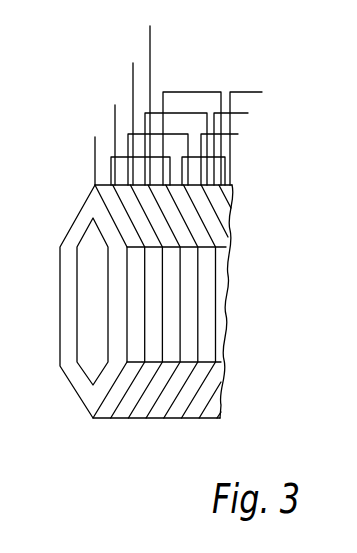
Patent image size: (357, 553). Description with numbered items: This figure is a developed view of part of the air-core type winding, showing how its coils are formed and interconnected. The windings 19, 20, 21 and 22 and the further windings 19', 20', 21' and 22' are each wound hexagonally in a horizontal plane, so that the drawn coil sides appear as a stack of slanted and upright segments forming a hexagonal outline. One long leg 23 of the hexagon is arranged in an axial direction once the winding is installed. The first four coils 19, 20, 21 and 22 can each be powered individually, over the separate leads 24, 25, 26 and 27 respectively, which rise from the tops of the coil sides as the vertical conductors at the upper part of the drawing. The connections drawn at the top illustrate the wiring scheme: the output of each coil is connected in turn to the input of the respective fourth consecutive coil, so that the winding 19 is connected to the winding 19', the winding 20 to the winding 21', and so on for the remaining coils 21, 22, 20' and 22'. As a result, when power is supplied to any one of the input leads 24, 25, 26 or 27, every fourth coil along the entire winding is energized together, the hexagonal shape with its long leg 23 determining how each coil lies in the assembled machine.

The winding 19 is at (102, 330).
The winding 20 is at (130, 328).
The winding 21 is at (155, 334).
The winding 22 is at (177, 322).
The winding 19' is at (198, 329).
The winding 20' is at (229, 319).
The winding 21' is at (252, 410).
The winding 22' is at (259, 194).
The long leg 23 is at (145, 315).
The lead 24 is at (95, 163).
The lead 25 is at (115, 113).
The lead 26 is at (133, 73).
The lead 27 is at (150, 45).